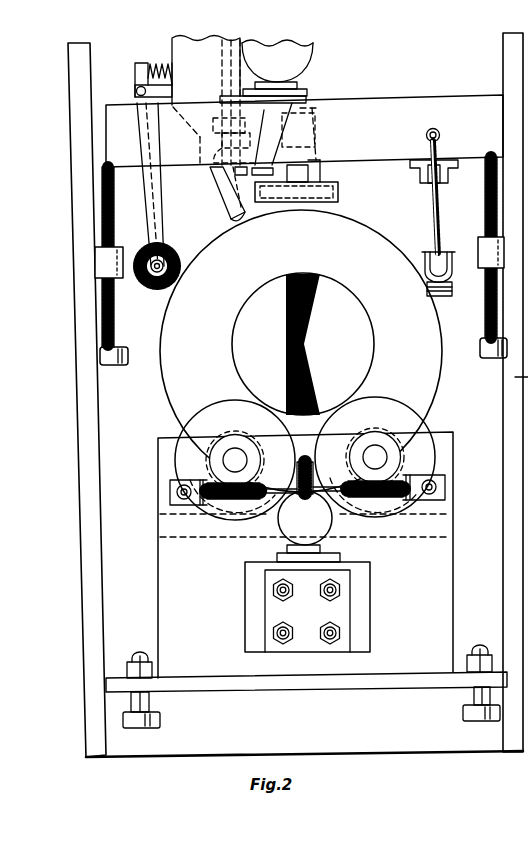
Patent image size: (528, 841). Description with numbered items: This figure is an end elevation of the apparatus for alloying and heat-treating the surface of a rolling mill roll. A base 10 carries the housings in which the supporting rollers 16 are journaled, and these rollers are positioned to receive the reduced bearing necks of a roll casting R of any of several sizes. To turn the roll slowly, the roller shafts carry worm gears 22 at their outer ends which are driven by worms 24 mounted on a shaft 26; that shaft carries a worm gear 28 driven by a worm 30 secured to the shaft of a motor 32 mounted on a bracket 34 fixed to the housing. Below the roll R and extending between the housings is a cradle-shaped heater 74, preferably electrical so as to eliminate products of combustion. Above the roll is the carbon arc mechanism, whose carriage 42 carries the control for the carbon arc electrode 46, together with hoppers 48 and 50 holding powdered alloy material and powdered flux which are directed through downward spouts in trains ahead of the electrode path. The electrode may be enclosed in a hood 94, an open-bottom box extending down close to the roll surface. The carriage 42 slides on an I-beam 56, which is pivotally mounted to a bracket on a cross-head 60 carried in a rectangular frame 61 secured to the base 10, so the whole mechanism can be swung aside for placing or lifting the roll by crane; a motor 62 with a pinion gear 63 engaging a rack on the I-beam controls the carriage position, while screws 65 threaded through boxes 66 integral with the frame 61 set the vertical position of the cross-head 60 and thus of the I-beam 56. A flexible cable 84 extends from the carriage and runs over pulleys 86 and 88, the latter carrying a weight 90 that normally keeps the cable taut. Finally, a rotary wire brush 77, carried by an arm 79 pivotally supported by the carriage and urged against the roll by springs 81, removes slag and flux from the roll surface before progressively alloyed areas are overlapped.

The base 10 is at (443, 741).
The rectangular frame 61 is at (88, 341).
The cross-head 60 is at (417, 110).
The screws 65 is at (118, 333).
The boxes 66 is at (123, 248).
The motor 62 is at (306, 50).
The carriage 42 is at (304, 92).
The I-beam 56 is at (316, 116).
The pinion gear 63 is at (213, 152).
The springs 81 is at (165, 63).
The arm 79 is at (160, 228).
The rotary wire brush 77 is at (153, 285).
The hopper 48 is at (226, 187).
The hopper 50 is at (224, 205).
The hood 94 is at (339, 193).
The carbon arc electrode 46 is at (318, 183).
The pulley 86 is at (428, 183).
The flexible cable 84 is at (434, 222).
The weight 90 is at (431, 292).
The pulley 88 is at (446, 252).
The roll casting R is at (442, 370).
The supporting rollers 16 is at (190, 422).
The worm gears 22 is at (158, 448).
The worms 24 is at (201, 505).
The worm gear 28 is at (304, 446).
The shaft 26 is at (279, 522).
The worm 30 is at (278, 537).
The motor 32 is at (338, 537).
The bracket 34 is at (313, 643).
The cradle-shaped heater 74 is at (417, 535).